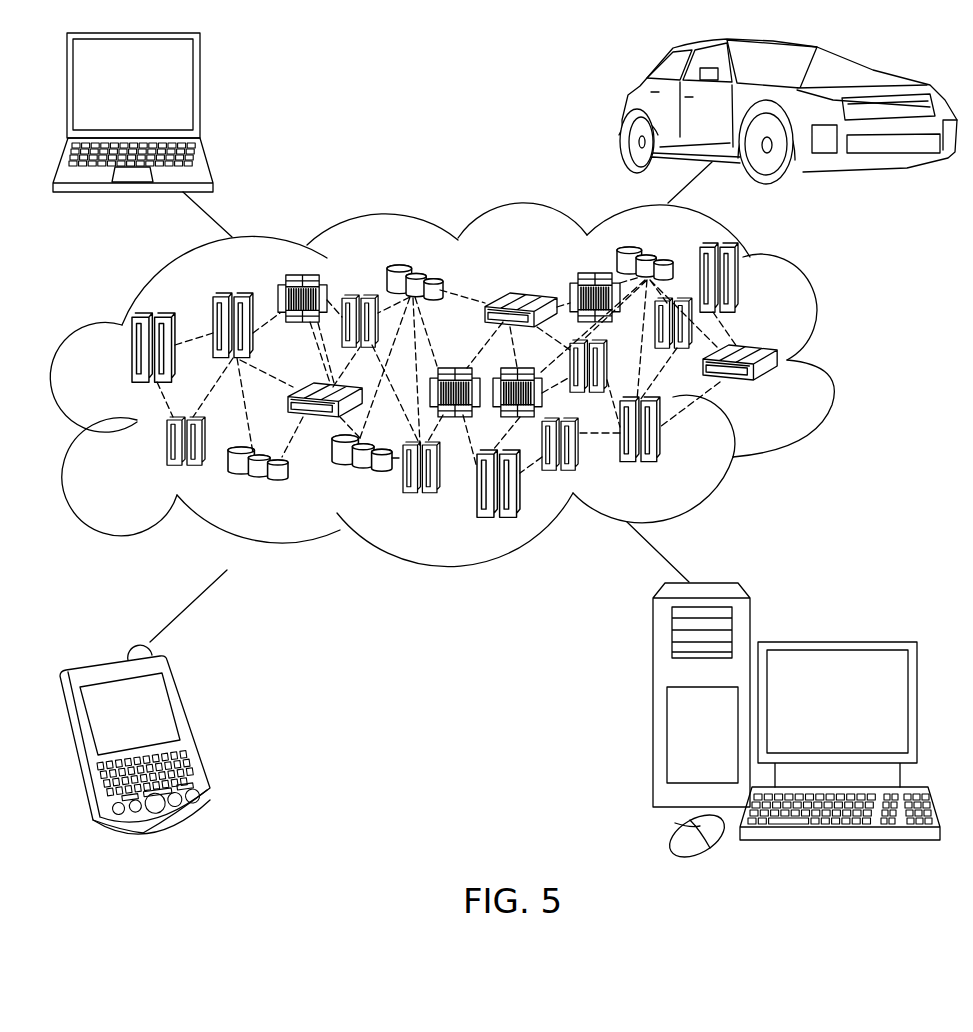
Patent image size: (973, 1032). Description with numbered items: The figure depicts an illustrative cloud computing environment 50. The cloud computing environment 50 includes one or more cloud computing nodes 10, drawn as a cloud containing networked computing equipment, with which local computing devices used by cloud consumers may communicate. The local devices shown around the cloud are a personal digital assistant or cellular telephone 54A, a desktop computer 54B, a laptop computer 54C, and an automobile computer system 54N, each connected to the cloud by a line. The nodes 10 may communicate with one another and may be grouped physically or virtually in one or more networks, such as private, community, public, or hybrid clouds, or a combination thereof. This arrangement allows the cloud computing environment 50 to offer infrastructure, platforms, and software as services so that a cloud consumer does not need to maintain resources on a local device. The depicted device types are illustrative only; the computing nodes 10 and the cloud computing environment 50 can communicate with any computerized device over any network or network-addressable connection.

The cloud computing node 10 is at (780, 390).
The cloud computing environment 50 is at (837, 358).
The personal digital assistant (PDA) or cellular telephone 54A is at (190, 728).
The desktop computer 54B is at (835, 642).
The laptop computer 54C is at (200, 92).
The automobile computer system 54N is at (622, 110).